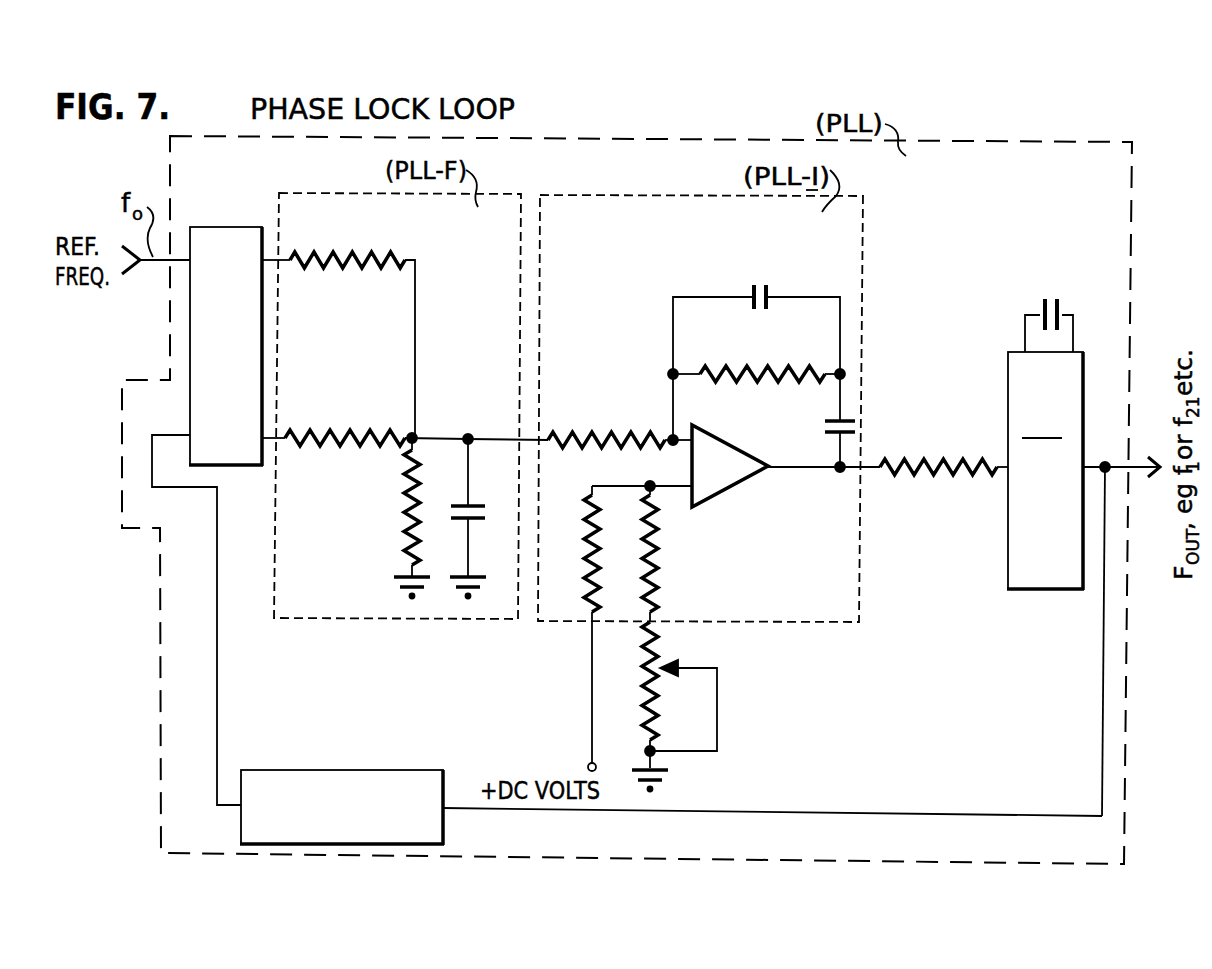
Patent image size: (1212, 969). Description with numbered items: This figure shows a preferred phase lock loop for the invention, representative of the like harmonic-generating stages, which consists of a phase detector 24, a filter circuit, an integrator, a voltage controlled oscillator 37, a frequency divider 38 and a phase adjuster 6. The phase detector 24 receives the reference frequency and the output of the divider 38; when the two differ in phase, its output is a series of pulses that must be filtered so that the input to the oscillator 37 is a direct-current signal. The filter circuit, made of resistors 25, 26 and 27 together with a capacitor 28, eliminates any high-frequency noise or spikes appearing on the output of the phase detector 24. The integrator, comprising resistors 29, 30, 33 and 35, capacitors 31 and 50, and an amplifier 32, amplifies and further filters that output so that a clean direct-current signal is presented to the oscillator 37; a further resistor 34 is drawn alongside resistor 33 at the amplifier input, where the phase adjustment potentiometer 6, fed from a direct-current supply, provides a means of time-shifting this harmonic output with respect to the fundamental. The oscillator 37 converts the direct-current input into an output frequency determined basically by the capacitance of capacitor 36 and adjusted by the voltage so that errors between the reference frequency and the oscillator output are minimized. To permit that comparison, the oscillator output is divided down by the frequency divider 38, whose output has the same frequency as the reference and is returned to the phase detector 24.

The phase detector 24 is at (232, 227).
The resistor 25 is at (376, 256).
The resistor 26 is at (340, 447).
The resistor 27 is at (404, 524).
The capacitor 28 is at (492, 508).
The resistor 29 is at (582, 450).
The resistor 30 is at (752, 373).
The capacitor 31 is at (826, 427).
The amplifier 32 is at (748, 476).
The resistor 33 is at (588, 578).
The resistor 34 is at (690, 583).
The resistor 35 is at (934, 476).
The capacitor 36 is at (1055, 297).
The voltage controlled oscillator 37 is at (1060, 536).
The frequency divider 38 is at (400, 841).
The capacitor 50 is at (759, 282).
The phase adjustment potentiometer 6 is at (752, 707).